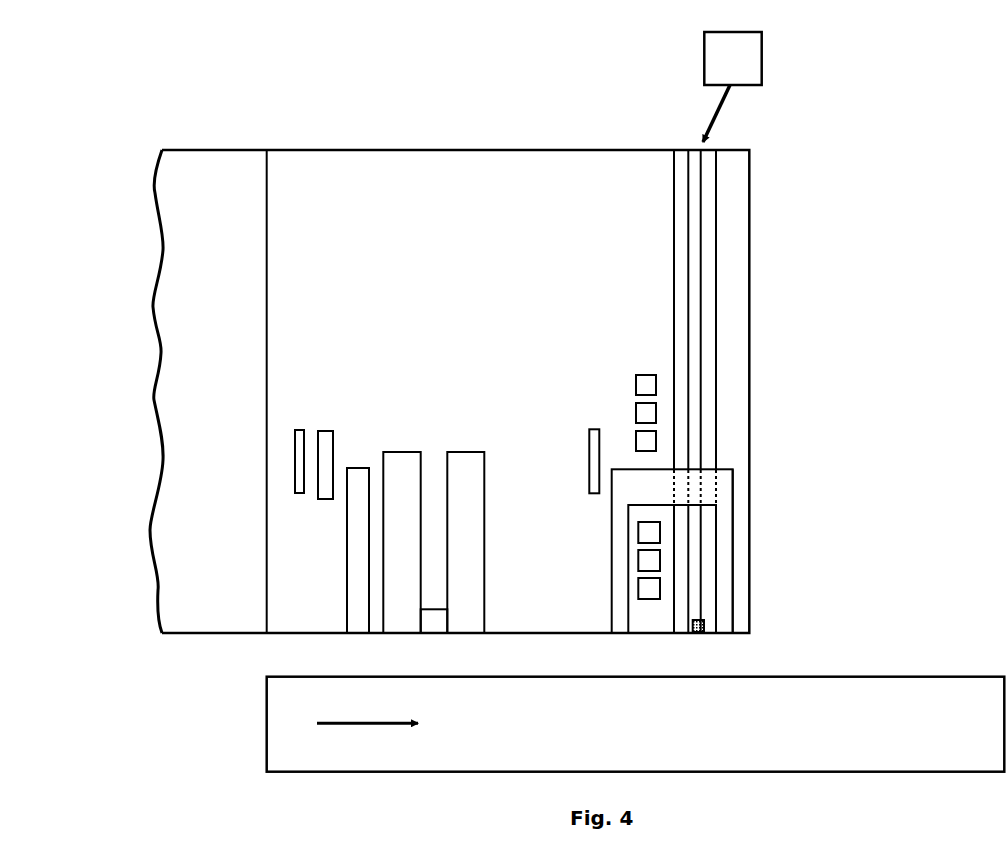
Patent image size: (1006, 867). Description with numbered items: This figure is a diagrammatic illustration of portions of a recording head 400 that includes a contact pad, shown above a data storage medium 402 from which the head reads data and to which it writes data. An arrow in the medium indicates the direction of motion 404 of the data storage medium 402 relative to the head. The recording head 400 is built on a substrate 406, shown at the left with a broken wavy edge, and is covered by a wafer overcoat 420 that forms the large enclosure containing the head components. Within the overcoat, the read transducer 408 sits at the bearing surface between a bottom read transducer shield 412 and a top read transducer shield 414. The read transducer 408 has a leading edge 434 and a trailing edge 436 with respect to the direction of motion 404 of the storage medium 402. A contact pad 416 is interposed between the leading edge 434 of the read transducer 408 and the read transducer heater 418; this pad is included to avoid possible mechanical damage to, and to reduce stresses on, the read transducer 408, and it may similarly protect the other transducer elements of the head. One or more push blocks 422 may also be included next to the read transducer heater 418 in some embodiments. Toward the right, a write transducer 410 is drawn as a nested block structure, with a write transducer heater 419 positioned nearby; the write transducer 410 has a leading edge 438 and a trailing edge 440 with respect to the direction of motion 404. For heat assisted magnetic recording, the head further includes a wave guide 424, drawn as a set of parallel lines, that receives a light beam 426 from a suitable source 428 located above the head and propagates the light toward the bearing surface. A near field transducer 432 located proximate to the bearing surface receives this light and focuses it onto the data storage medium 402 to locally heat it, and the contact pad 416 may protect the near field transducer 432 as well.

The recording head 400 is at (330, 89).
The data storage medium 402 is at (868, 740).
The direction of motion 404 is at (367, 725).
The substrate 406 is at (217, 562).
The read transducer 408 is at (435, 622).
The write transducer 410 is at (723, 557).
The bottom read transducer shield 412 is at (408, 458).
The top read transducer shield 414 is at (470, 460).
The contact pad 416 is at (358, 473).
The read transducer heater 418 is at (302, 435).
The write transducer heater 419 is at (593, 430).
The wafer overcoat 420 is at (457, 165).
The push block 422 is at (320, 493).
The wave guide 424 is at (714, 140).
The light beam 426 is at (725, 100).
The source 428 is at (738, 48).
The near field transducer 432 is at (697, 633).
The leading edge 434 is at (420, 613).
The trailing edge 436 is at (448, 614).
The leading edge 438 is at (717, 580).
The trailing edge 440 is at (733, 612).